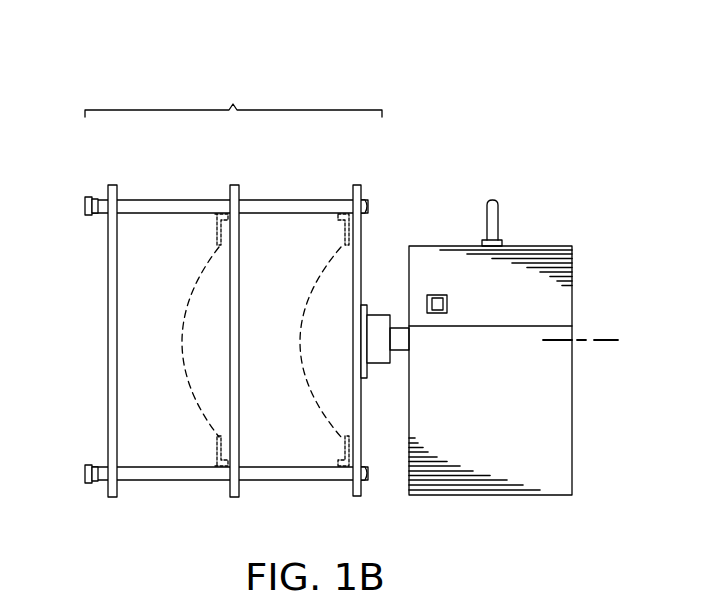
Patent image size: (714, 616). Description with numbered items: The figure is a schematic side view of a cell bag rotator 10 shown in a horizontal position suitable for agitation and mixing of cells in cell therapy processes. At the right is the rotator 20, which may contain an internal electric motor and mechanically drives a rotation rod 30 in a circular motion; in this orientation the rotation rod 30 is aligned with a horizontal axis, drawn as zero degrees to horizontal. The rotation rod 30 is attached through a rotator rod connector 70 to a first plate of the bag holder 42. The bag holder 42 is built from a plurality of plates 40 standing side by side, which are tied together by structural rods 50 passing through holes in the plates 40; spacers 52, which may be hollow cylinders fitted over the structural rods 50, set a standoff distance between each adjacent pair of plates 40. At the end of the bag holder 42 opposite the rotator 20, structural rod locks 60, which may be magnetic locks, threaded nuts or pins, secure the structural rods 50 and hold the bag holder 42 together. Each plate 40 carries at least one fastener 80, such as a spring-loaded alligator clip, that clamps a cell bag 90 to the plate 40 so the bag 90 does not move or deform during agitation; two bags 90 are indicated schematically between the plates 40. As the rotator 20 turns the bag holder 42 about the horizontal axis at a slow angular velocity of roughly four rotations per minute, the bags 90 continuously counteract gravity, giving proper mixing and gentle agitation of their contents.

The cell bag rotator 10 is at (157, 72).
The rotator 20 is at (538, 245).
The rotation rod 30 is at (412, 346).
The plates 40 is at (111, 184).
The bag holder 42 is at (233, 95).
The structural rods 50 is at (369, 208).
The spacers 52 is at (298, 200).
The structural rod locks 60 is at (84, 206).
The rotator rod connector 70 is at (376, 314).
The fastener 80 is at (215, 228).
The cell bags 90 is at (178, 334).